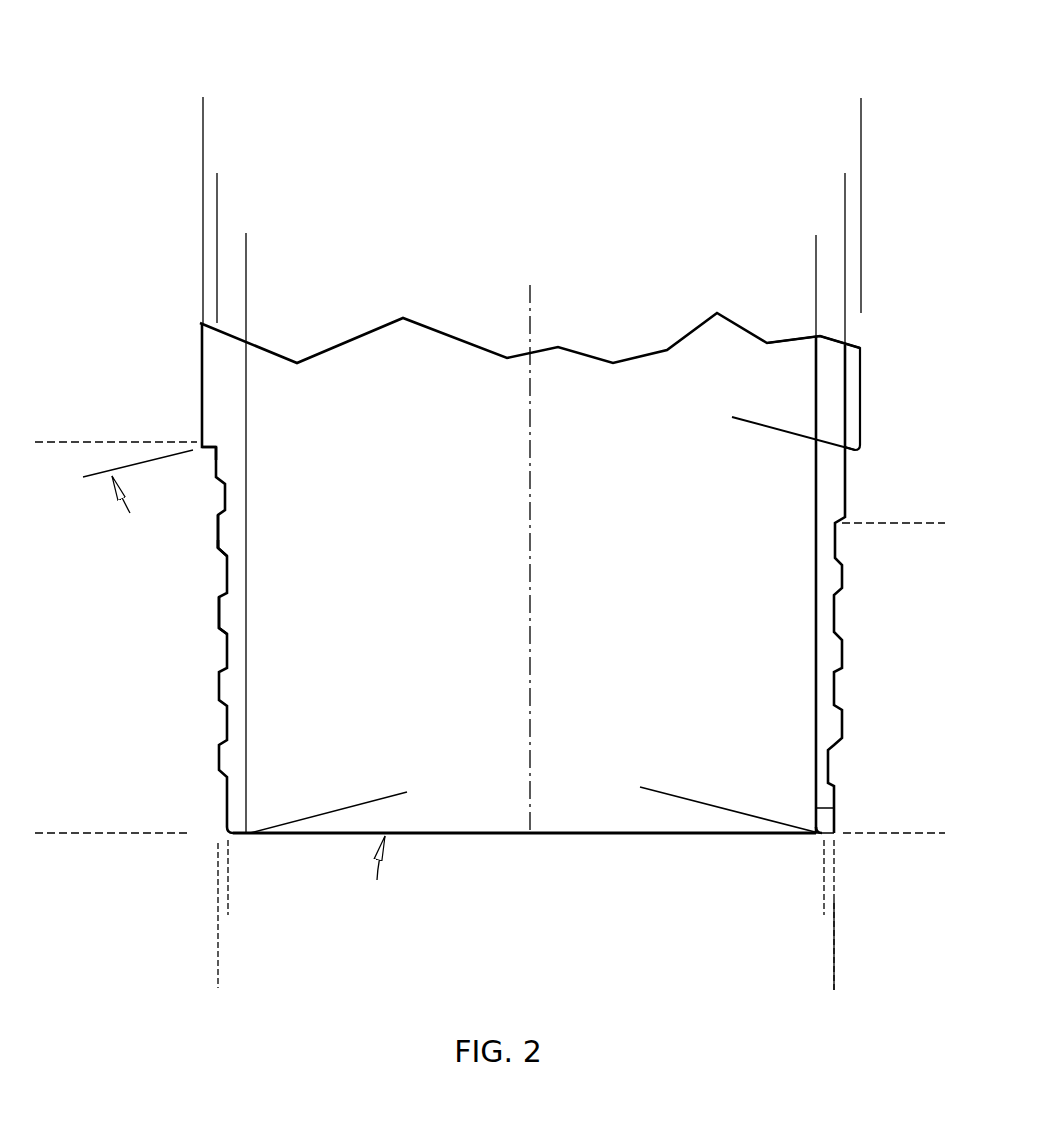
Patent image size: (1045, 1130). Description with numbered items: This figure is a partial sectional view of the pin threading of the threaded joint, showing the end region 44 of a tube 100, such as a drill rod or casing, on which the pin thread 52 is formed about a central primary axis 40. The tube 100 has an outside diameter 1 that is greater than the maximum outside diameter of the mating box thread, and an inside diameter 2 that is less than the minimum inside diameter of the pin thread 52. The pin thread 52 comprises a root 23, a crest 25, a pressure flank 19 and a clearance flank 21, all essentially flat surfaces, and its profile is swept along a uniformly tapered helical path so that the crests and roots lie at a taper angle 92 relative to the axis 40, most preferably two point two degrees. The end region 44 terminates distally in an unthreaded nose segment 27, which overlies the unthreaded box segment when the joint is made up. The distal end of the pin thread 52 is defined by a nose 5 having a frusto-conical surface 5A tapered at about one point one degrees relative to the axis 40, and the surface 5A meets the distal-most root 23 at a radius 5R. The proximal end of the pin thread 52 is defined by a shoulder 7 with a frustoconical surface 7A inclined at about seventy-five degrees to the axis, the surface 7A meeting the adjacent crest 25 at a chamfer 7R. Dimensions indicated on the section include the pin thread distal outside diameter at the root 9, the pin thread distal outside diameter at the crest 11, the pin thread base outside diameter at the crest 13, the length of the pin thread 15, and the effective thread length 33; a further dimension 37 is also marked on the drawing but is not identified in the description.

The pin thread 52 is at (275, 72).
The outside diameter of tube 1 is at (861, 122).
The pin thread base OD at crest 13 is at (845, 197).
The inside diameter of tube 2 is at (816, 257).
The end region 44 is at (627, 321).
The tube 100 is at (828, 386).
The shoulder 7 is at (826, 472).
The chamfer 7R is at (218, 448).
The frustoconical surface of shoulder 7A is at (105, 442).
The root 23 is at (214, 546).
The crest 25 is at (211, 562).
The pressure flank 19 is at (223, 593).
The clearance flank 21 is at (222, 633).
The length of pin thread 15 is at (59, 442).
The central primary axis 40 is at (530, 535).
The diagonal dimension 37 is at (757, 425).
The effective thread length 33 is at (918, 523).
The frusto-conical surface of nose 5A is at (360, 755).
The radius 5R is at (815, 828).
The unthreaded nose segment 27 is at (833, 786).
The nose 5 is at (836, 814).
The pin thread distal OD at root 9 is at (228, 892).
The pin thread distal OD at crest 11 is at (218, 966).
The taper angle 92 is at (836, 940).